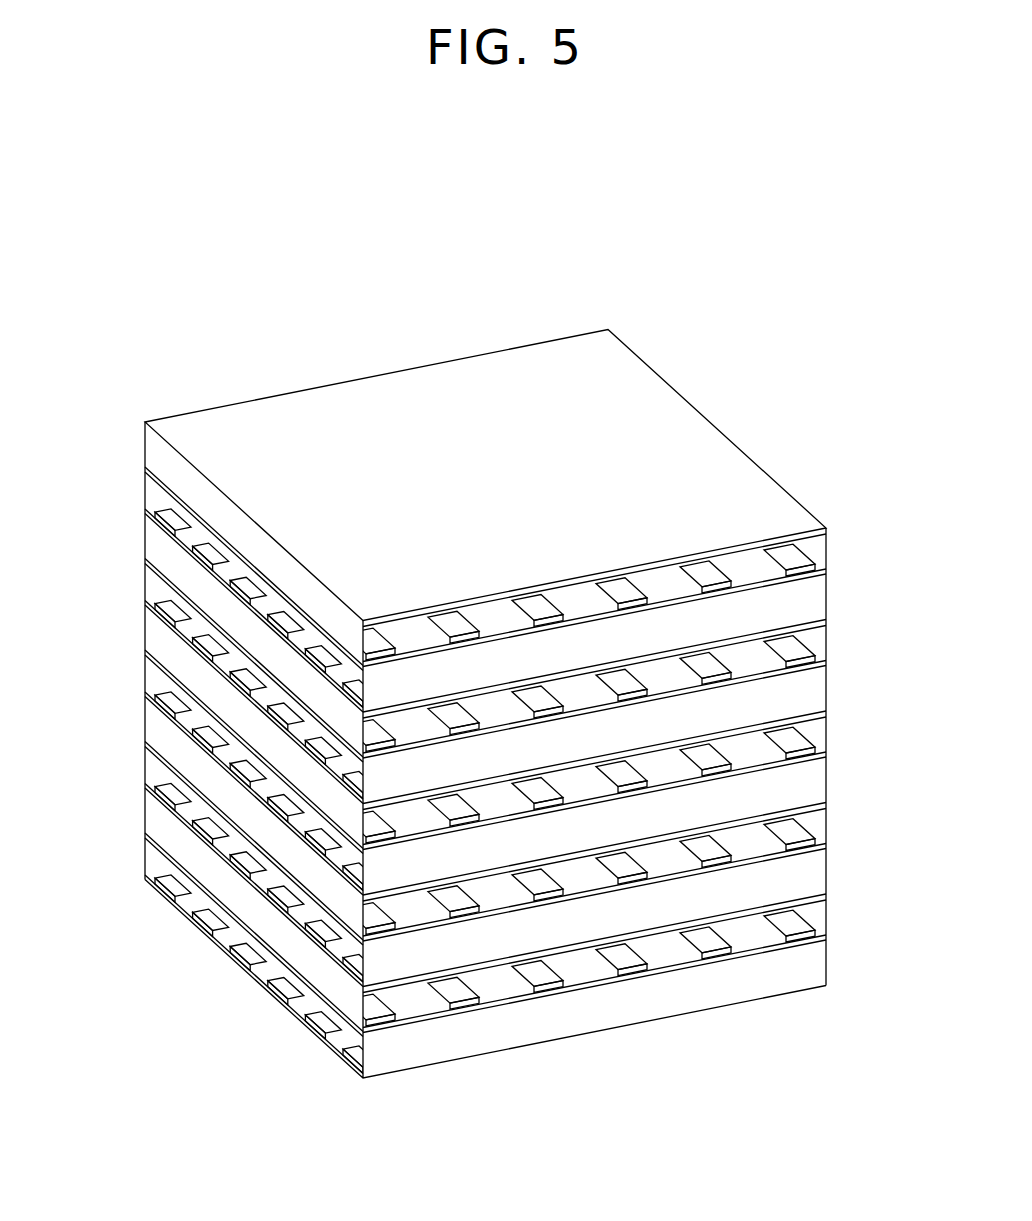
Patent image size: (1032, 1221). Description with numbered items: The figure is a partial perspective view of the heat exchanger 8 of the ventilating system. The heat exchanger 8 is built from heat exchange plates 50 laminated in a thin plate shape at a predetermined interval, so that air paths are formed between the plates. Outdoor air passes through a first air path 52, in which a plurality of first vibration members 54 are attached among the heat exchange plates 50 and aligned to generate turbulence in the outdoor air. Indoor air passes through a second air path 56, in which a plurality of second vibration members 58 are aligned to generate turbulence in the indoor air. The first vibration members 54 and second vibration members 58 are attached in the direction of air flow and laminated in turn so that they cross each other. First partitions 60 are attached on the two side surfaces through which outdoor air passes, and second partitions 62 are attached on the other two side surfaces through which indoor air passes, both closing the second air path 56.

The heat exchanger 8 is at (664, 342).
The heat exchange plates 50 is at (783, 518).
The first air path 52 is at (758, 579).
The first vibration members 54 is at (788, 563).
The second air path 56 is at (188, 566).
The second vibration members 58 is at (213, 563).
The first partitions 60 is at (790, 613).
The second partitions 62 is at (160, 458).